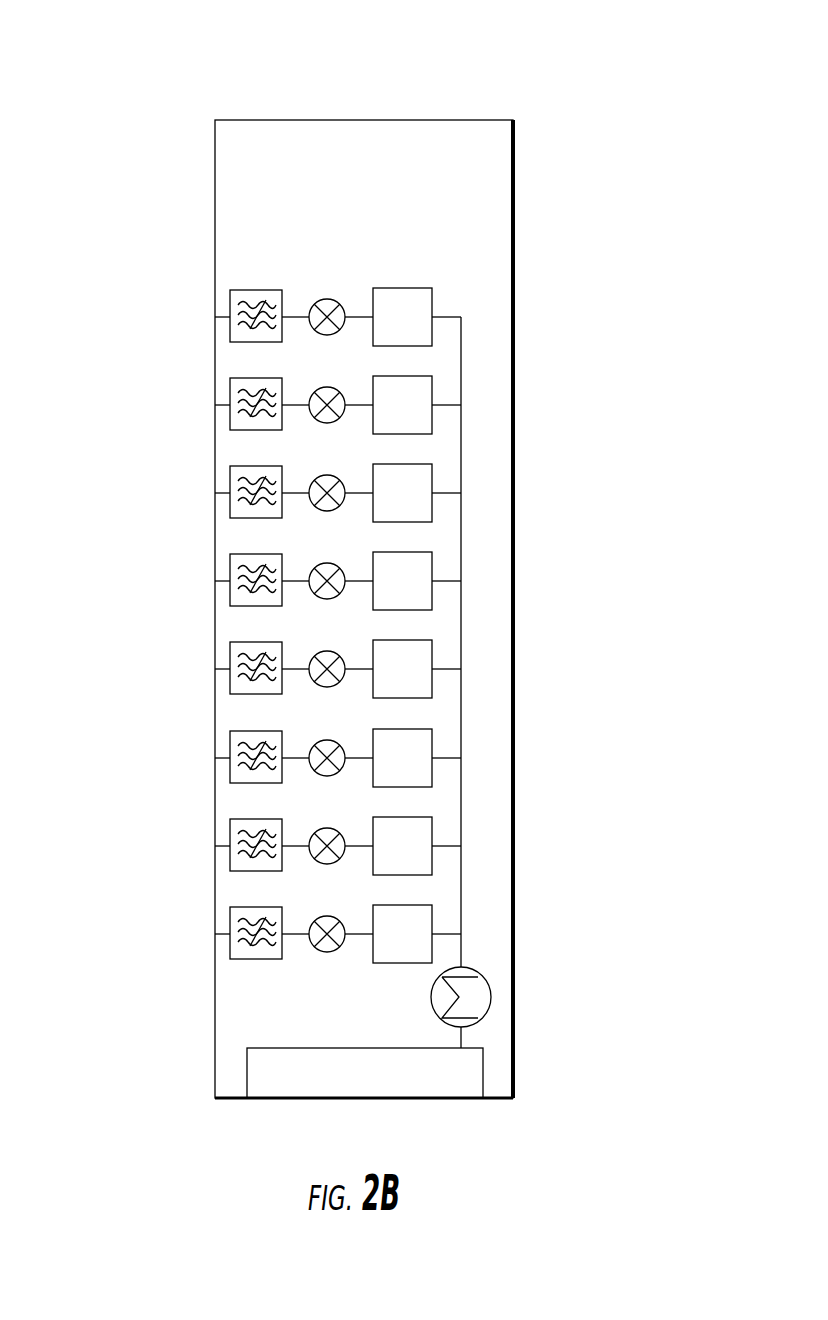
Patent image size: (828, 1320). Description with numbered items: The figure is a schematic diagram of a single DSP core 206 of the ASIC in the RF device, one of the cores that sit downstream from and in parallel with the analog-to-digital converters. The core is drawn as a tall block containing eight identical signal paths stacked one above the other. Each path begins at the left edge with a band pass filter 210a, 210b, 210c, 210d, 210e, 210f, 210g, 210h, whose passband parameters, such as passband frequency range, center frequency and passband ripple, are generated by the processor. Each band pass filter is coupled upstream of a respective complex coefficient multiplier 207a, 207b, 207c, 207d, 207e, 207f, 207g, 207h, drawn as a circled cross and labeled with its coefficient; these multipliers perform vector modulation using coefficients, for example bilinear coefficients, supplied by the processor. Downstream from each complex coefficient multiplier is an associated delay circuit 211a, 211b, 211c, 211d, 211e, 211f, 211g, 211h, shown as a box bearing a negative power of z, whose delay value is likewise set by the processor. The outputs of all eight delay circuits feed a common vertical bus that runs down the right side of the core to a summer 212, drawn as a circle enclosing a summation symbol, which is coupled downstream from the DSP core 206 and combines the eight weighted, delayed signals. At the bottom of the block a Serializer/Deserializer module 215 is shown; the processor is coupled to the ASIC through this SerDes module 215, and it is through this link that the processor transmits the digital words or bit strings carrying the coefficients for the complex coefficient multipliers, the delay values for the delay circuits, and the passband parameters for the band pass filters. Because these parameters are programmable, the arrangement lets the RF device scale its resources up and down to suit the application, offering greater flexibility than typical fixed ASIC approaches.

The DSP core 206 is at (630, 125).
The summer 212 is at (478, 985).
The Serializer/Deserializer (SerDes) module 215 is at (422, 1080).
The band pass filter 210a is at (230, 297).
The complex coefficient multiplier 207a is at (314, 330).
The delay circuit 211a is at (432, 303).
The band pass filter 210b is at (230, 385).
The complex coefficient multiplier 207b is at (314, 418).
The delay circuit 211b is at (432, 391).
The band pass filter 210c is at (230, 473).
The complex coefficient multiplier 207c is at (314, 506).
The delay circuit 211c is at (432, 479).
The band pass filter 210d is at (230, 561).
The complex coefficient multiplier 207d is at (314, 594).
The delay circuit 211d is at (432, 567).
The band pass filter 210e is at (230, 649).
The complex coefficient multiplier 207e is at (314, 682).
The delay circuit 211e is at (432, 655).
The band pass filter 210f is at (230, 738).
The complex coefficient multiplier 207f is at (314, 771).
The delay circuit 211f is at (432, 744).
The band pass filter 210g is at (230, 826).
The complex coefficient multiplier 207g is at (314, 859).
The delay circuit 211g is at (432, 832).
The band pass filter 210h is at (230, 914).
The complex coefficient multiplier 207h is at (314, 947).
The delay circuit 211h is at (432, 920).